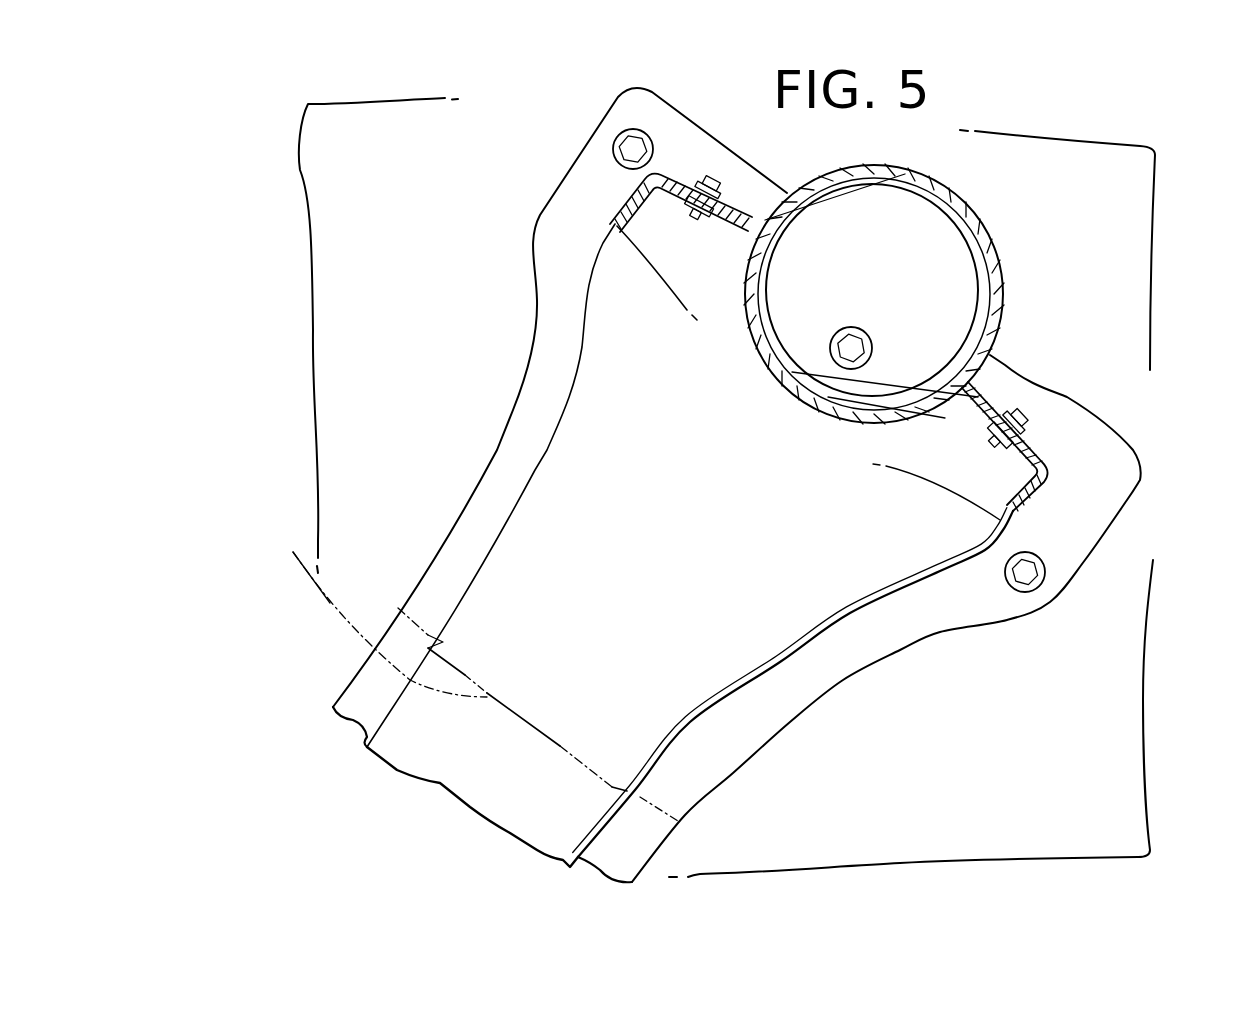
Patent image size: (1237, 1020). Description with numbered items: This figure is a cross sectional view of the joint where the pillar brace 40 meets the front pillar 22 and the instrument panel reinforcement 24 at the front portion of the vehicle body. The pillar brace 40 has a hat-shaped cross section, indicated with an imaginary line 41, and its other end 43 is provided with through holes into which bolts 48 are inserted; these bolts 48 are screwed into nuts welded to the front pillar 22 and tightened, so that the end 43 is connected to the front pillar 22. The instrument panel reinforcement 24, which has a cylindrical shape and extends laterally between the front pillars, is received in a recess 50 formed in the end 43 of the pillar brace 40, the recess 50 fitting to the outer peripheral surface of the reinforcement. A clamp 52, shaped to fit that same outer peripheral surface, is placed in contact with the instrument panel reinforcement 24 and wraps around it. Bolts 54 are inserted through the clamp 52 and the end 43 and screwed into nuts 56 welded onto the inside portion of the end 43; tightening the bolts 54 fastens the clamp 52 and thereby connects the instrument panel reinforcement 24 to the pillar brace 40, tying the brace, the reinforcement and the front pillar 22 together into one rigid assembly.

The front pillar 22 is at (998, 720).
The instrument panel reinforcement 24 is at (978, 267).
The pillar brace 40 is at (478, 480).
The imaginary line 41 is at (293, 552).
The end 43 is at (672, 357).
The bolt 48 is at (628, 135).
The recess 50 is at (896, 412).
The clamp 52 is at (963, 207).
The bolt 54 is at (1027, 417).
The nut 56 is at (1010, 447).